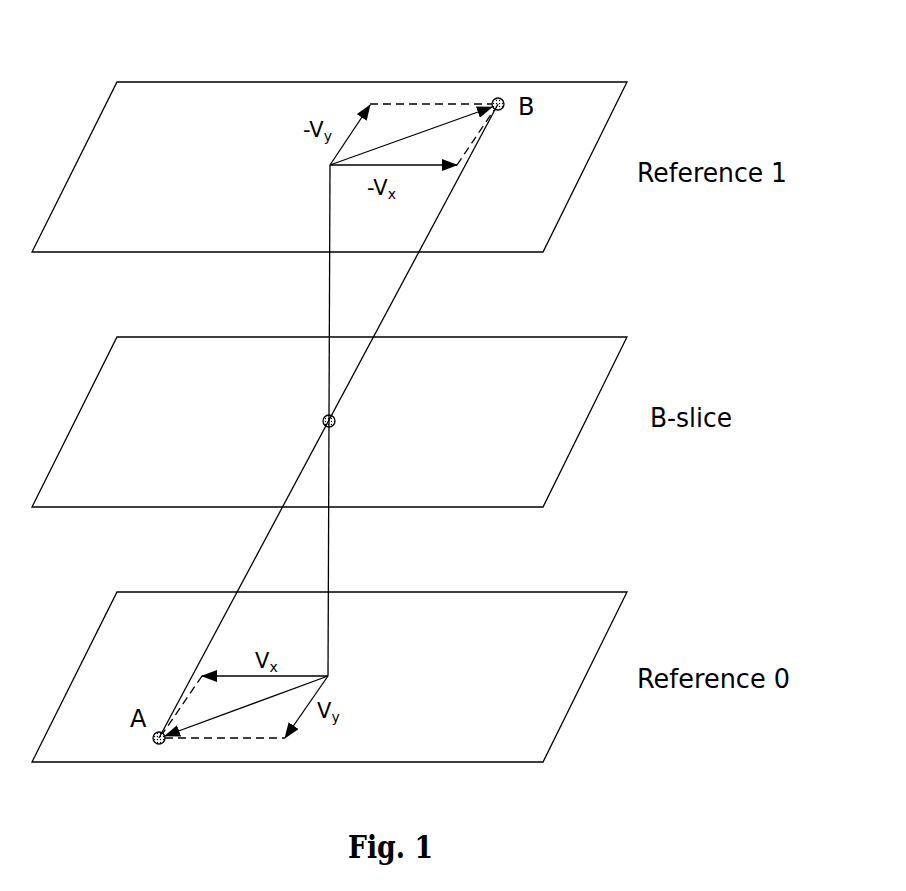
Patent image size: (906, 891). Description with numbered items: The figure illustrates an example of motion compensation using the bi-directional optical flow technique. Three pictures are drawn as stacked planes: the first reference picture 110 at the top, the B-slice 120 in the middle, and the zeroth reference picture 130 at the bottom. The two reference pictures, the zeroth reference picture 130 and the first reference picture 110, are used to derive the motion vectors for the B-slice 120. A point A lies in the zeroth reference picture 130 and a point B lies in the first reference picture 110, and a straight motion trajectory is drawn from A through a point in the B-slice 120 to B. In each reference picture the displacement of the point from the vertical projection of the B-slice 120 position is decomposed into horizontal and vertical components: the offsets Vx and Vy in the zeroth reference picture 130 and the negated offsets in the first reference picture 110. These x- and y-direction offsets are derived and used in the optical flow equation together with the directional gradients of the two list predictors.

The reference picture 1 110 is at (538, 82).
The B-slice 120 is at (538, 337).
The reference picture 0 130 is at (538, 592).